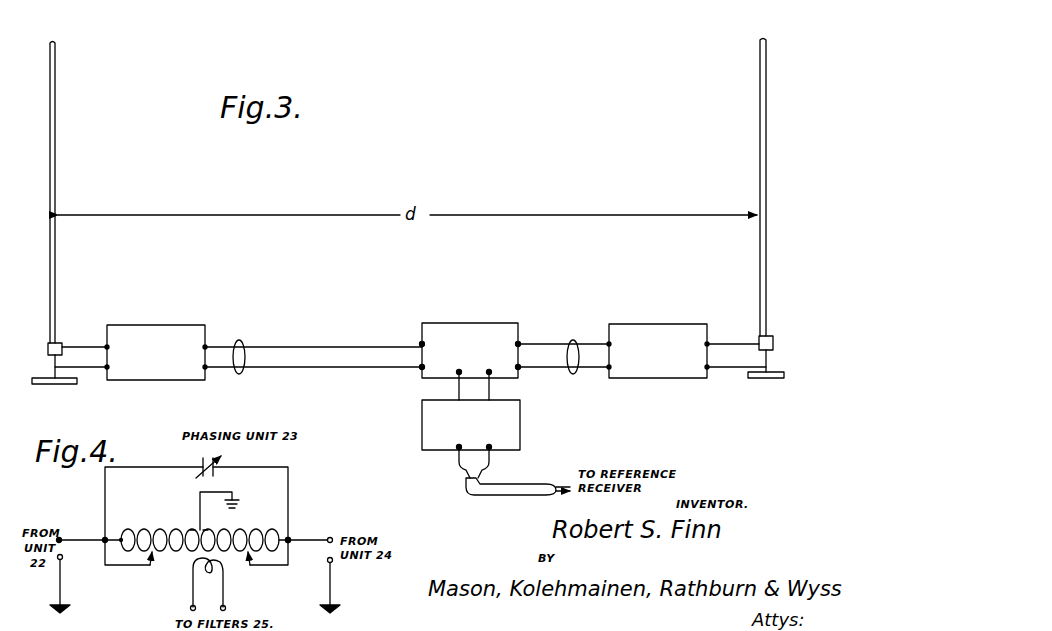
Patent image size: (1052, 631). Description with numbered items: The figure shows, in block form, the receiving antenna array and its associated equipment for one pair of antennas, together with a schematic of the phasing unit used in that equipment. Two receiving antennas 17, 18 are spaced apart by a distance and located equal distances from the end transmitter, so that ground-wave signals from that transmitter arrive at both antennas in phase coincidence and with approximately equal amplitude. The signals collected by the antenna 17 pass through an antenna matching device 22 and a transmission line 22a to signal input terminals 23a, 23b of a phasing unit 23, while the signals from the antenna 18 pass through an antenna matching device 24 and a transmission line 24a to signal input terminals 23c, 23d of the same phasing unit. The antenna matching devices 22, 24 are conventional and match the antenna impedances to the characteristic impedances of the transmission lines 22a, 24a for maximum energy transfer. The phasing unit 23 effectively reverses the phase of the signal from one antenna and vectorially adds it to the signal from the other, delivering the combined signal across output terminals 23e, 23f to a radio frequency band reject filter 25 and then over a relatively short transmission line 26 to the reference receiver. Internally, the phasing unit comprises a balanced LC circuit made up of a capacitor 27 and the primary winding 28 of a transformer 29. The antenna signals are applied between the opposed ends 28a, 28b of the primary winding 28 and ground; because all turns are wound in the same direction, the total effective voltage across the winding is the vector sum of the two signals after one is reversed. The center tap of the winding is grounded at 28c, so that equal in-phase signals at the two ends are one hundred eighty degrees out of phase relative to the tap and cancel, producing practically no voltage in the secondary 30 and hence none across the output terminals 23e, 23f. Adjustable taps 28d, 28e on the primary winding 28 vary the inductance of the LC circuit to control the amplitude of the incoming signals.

In FIG. 3, the antenna 17 is at (55, 128).
In FIG. 3, the antenna 18 is at (760, 108).
In FIG. 3, the antenna matching device 22 is at (165, 325).
In FIG. 3, the transmission line 22a is at (242, 340).
In FIG. 3, the phasing unit 23 is at (480, 323).
In FIG. 3, the signal input terminal 23a is at (424, 342).
In FIG. 4, the signal input terminal 23a is at (62, 539).
In FIG. 3, the signal input terminal 23b is at (424, 368).
In FIG. 4, the signal input terminal 23b is at (66, 562).
In FIG. 3, the signal input terminal 23c is at (518, 344).
In FIG. 4, the signal input terminal 23c is at (331, 538).
In FIG. 3, the signal input terminal 23d is at (518, 368).
In FIG. 4, the signal input terminal 23d is at (333, 563).
In FIG. 3, the output terminal 23e is at (458, 375).
In FIG. 4, the output terminal 23e is at (190, 606).
In FIG. 3, the output terminal 23f is at (490, 375).
In FIG. 4, the output terminal 23f is at (226, 606).
In FIG. 3, the antenna matching device 24 is at (645, 324).
In FIG. 3, the transmission line 24a is at (577, 340).
In FIG. 3, the radio frequency band reject filter 25 is at (520, 432).
In FIG. 3, the transmission line 26 is at (543, 478).
In FIG. 4, the capacitor 27 is at (203, 465).
In FIG. 4, the primary winding 28 is at (244, 540).
In FIG. 4, the end of primary winding 28a is at (120, 538).
In FIG. 4, the end of primary winding 28b is at (290, 539).
In FIG. 4, the grounded center tap 28c is at (236, 504).
In FIG. 4, the adjustable tap 28d is at (148, 565).
In FIG. 4, the adjustable tap 28e is at (250, 565).
In FIG. 4, the transformer 29 is at (172, 552).
In FIG. 4, the secondary 30 is at (218, 585).